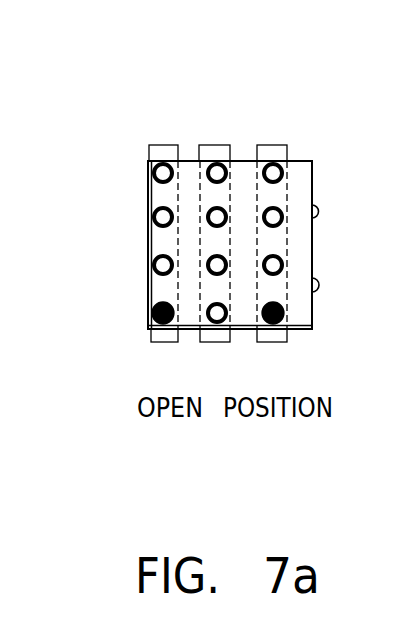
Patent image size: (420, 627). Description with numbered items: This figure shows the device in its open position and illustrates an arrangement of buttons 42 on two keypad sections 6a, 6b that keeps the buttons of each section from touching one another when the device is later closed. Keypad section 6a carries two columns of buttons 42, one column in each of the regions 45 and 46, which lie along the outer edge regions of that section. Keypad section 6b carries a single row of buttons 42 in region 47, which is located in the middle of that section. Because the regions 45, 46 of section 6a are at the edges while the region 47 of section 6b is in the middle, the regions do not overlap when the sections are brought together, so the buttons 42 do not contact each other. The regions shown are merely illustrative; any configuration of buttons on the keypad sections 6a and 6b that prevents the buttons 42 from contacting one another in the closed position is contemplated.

The keypad section 6a is at (190, 247).
The keypad section 6b is at (297, 185).
The buttons 42 is at (153, 174).
The region 45 is at (157, 134).
The region 46 is at (172, 133).
The region 47 is at (288, 134).